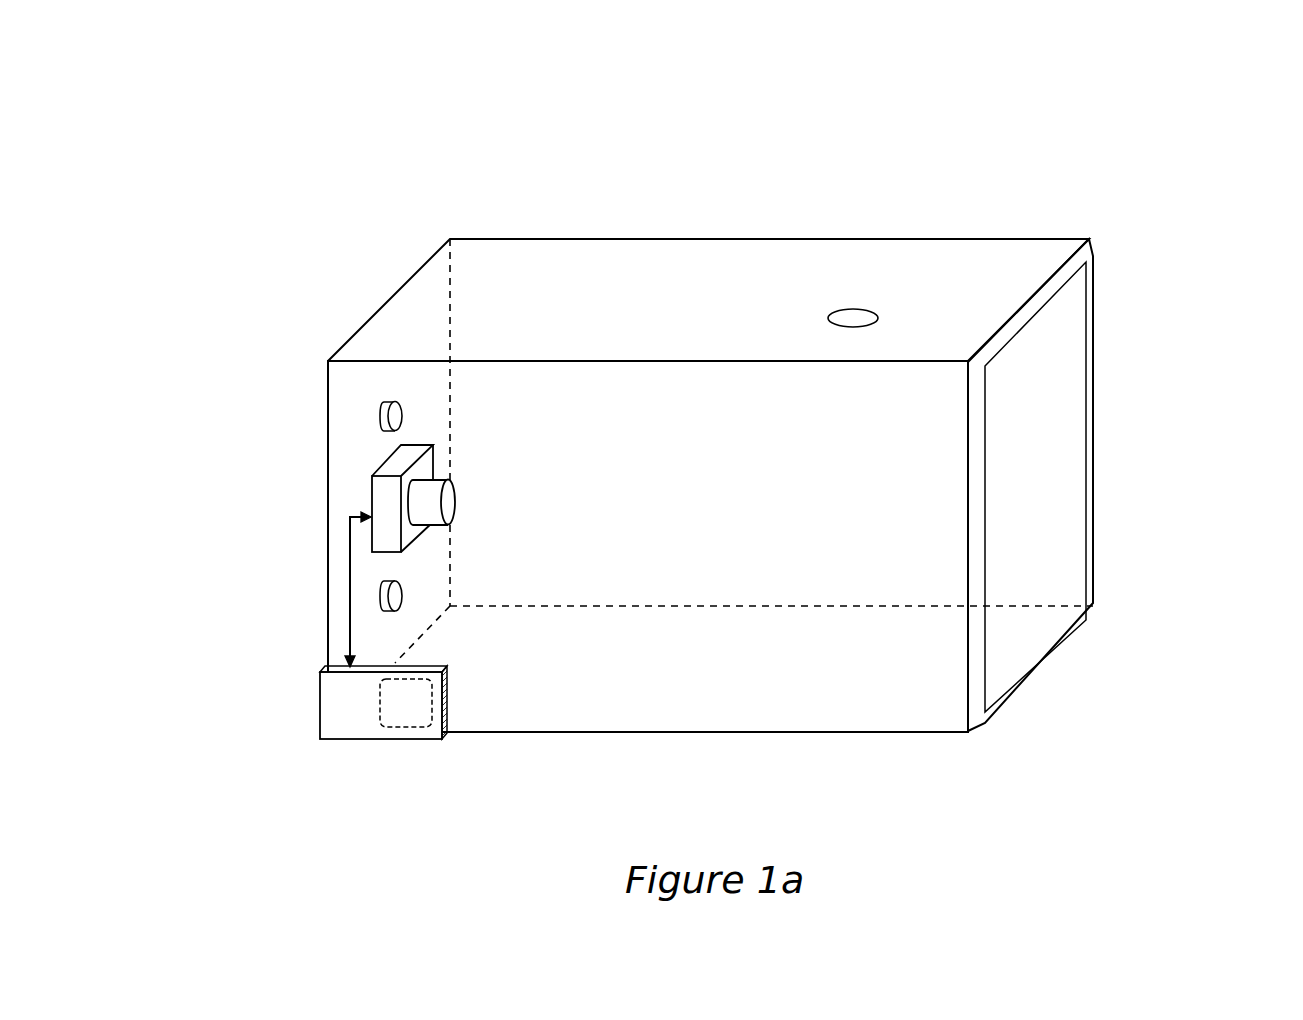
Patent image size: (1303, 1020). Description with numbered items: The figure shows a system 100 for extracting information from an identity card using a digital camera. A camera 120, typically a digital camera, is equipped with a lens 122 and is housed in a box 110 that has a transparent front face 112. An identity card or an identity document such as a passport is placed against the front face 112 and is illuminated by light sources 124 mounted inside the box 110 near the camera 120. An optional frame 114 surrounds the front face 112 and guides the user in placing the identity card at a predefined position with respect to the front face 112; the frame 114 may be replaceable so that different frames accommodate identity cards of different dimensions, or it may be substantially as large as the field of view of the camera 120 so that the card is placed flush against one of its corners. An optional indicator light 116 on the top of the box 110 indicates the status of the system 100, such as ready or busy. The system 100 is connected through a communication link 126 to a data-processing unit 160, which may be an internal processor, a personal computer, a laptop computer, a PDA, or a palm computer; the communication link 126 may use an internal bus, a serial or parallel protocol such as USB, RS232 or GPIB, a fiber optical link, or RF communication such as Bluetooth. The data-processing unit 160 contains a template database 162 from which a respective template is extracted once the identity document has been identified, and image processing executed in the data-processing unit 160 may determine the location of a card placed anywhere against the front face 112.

The system 100 is at (523, 178).
The box 110 is at (710, 238).
The transparent front face 112 is at (1056, 385).
The frame 114 is at (1095, 528).
The indicator light 116 is at (860, 317).
The camera 120 is at (383, 493).
The lens 122 is at (452, 507).
The light sources 124 is at (380, 415).
The communication link 126 is at (350, 587).
The data-processing unit 160 is at (337, 714).
The template database 162 is at (405, 727).